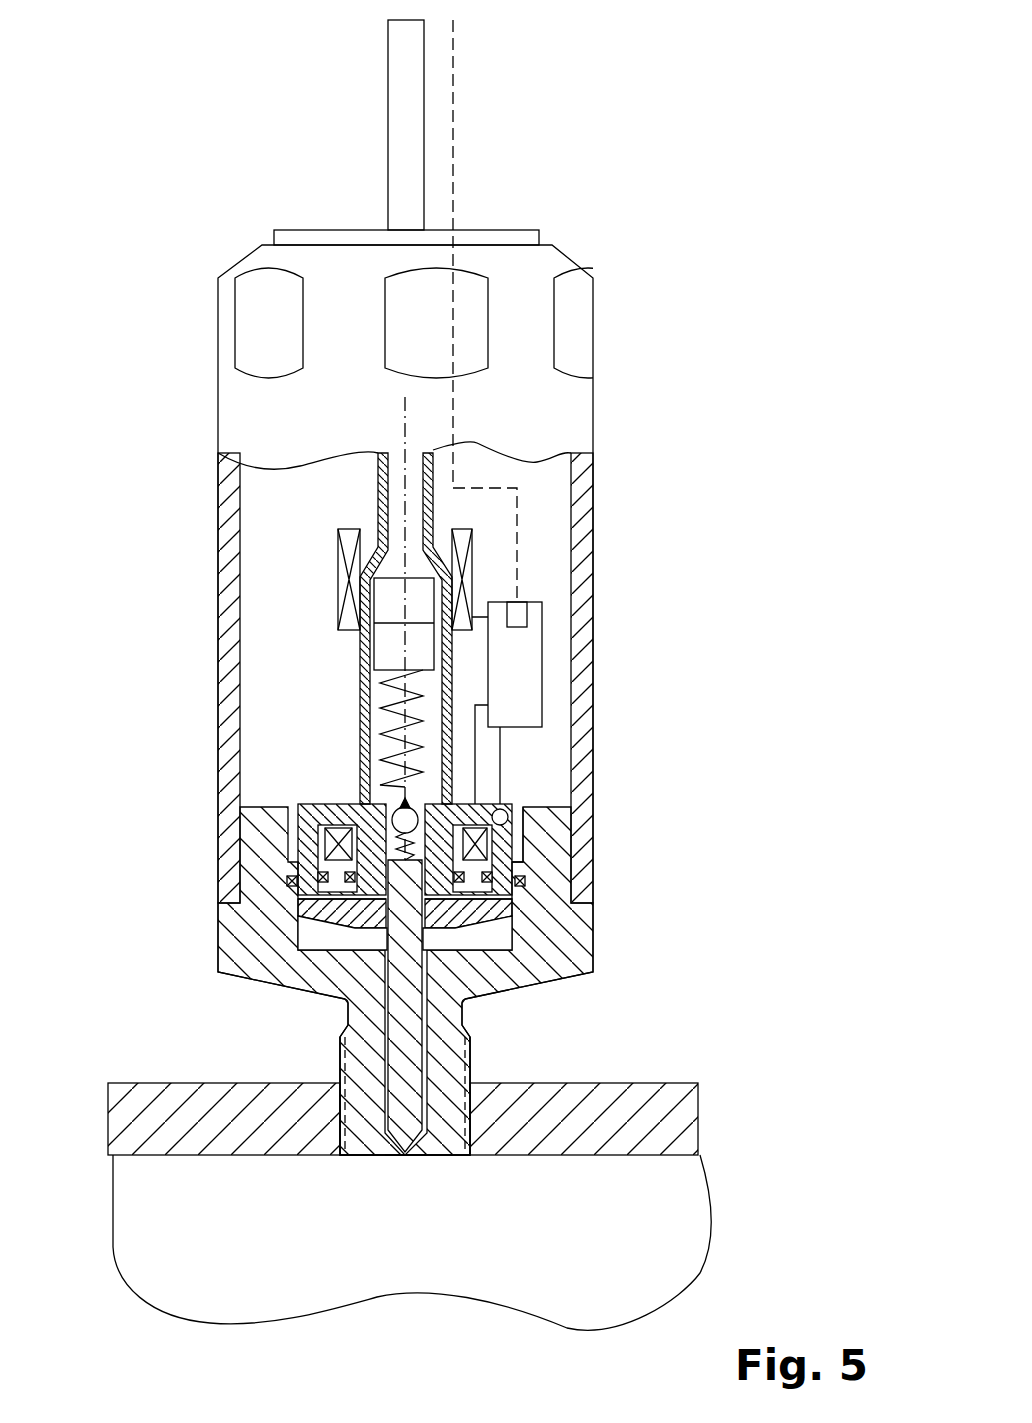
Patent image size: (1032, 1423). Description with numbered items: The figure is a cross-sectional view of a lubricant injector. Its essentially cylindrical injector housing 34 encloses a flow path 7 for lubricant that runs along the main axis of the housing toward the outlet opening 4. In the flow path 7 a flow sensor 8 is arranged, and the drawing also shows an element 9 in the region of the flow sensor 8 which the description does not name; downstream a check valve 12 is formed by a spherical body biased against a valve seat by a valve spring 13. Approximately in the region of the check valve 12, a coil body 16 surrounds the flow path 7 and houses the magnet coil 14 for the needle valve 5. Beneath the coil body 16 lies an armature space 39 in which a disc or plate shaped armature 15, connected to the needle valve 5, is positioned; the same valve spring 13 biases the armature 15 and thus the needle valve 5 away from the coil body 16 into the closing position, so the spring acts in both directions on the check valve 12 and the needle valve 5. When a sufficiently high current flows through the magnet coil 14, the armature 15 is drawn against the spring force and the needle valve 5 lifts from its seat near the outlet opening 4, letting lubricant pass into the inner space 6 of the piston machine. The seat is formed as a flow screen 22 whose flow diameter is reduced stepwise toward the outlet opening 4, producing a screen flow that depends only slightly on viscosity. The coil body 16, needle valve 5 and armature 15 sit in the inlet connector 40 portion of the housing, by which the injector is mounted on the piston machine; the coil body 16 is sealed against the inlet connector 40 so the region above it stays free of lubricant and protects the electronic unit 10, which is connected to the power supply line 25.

The power supply line 25 is at (453, 173).
The flow path 7 is at (403, 503).
The flow sensor 8 is at (485, 571).
The permanent magnet 9 is at (383, 637).
The electronic unit 10 is at (525, 663).
The injector housing 34 is at (230, 747).
The check valve 12 is at (417, 818).
The valve spring 13 is at (403, 843).
The magnet coil 14 is at (523, 842).
The coil body 16 is at (488, 855).
The armature 15 is at (468, 920).
The armature space 39 is at (320, 937).
The inlet connector 40 is at (512, 972).
The needle valve 5 is at (407, 1065).
The outlet opening 4 is at (405, 1157).
The flow screen 22 is at (447, 1157).
The inner space 6 is at (210, 1252).